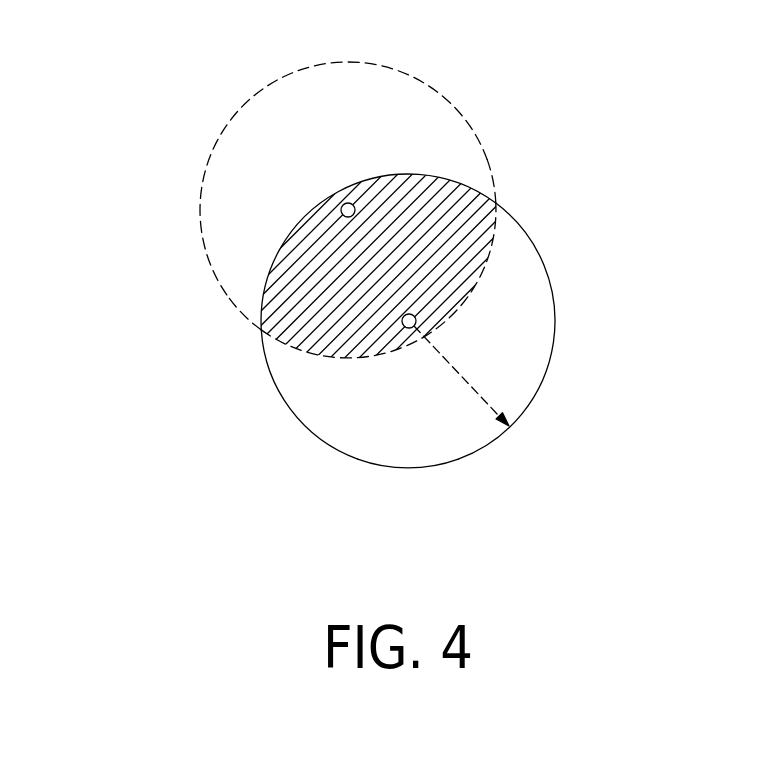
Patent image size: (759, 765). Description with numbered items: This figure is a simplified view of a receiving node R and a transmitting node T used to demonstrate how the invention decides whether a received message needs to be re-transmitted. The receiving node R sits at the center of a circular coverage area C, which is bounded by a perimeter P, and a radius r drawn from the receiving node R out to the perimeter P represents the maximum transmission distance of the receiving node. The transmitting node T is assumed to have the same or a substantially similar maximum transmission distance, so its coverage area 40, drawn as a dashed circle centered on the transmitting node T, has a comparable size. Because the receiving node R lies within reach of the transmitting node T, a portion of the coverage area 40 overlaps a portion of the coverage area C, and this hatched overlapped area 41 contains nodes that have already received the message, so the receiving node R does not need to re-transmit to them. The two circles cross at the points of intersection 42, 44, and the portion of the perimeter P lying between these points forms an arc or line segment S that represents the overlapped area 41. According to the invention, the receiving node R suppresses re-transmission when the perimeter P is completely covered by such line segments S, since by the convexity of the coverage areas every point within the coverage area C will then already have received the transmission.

The coverage area of transmitting node 40 is at (225, 193).
The overlapped area 41 is at (467, 212).
The point of intersection 42 is at (494, 202).
The point of intersection 44 is at (262, 330).
The arc or line segment S is at (425, 172).
The transmitting node T is at (345, 204).
The perimeter P is at (537, 248).
The coverage area C is at (397, 443).
The receiving node R is at (402, 324).
The radius r is at (487, 403).